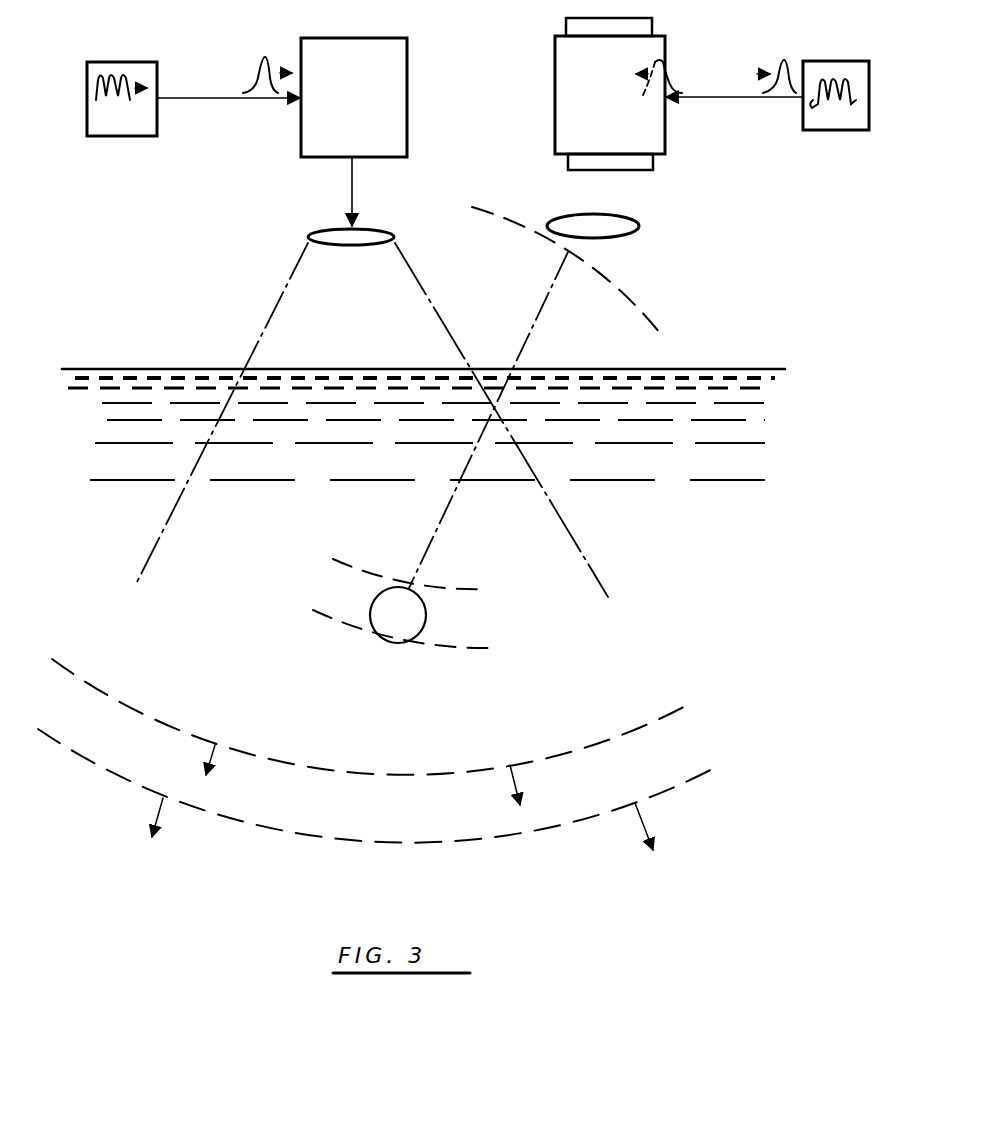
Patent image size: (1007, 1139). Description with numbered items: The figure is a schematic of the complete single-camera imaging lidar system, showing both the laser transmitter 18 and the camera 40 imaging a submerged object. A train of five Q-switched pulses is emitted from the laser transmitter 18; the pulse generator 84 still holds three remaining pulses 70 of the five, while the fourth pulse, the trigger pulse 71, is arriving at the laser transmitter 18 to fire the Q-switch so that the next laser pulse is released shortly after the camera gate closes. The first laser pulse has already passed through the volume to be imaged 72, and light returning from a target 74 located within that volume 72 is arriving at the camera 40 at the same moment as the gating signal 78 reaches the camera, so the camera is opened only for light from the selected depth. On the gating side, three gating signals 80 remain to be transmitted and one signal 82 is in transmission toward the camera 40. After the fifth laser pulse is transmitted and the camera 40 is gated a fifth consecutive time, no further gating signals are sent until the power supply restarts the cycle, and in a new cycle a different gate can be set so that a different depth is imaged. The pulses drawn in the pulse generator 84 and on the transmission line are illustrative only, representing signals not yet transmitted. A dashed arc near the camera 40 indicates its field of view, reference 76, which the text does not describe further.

The laser transmitter 18 is at (408, 108).
The camera 40 is at (556, 118).
The pulses 70 is at (100, 103).
The trigger pulse 71 is at (268, 66).
The volume to be imaged 72 is at (490, 590).
The target 74 is at (410, 627).
The receiver field of view 76 is at (628, 302).
The gating signal 78 is at (668, 72).
The gating signals 80 is at (806, 120).
The signal 82 is at (786, 64).
The pulse generator 84 is at (110, 137).